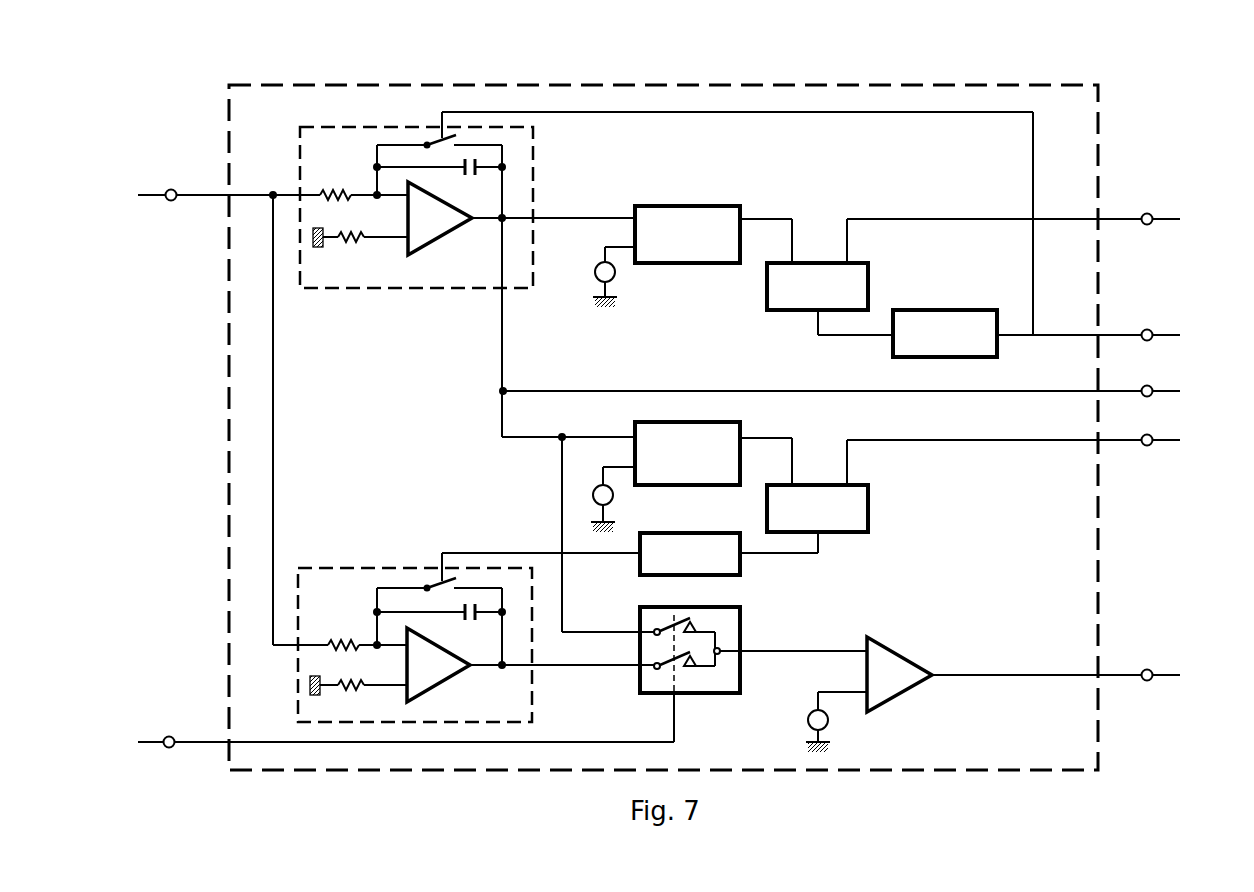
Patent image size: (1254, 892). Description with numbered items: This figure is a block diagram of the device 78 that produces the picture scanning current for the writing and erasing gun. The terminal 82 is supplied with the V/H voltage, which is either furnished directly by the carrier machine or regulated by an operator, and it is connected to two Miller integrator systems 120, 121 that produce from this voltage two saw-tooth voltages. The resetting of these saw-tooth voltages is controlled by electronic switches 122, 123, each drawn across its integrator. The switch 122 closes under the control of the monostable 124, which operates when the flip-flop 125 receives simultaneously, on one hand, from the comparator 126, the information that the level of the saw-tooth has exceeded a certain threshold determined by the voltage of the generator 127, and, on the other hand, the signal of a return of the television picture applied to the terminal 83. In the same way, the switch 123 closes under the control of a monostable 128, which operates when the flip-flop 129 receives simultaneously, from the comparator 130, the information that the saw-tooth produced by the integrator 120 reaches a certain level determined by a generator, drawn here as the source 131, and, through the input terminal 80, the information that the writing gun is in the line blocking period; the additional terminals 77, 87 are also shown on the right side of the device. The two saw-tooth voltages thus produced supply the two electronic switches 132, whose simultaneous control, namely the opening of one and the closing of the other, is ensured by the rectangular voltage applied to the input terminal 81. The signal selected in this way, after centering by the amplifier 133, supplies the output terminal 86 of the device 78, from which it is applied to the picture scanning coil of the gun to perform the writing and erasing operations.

The output terminal 77 is at (1147, 329).
The device 78 is at (245, 442).
The input terminal 80 is at (1147, 446).
The input terminal 81 is at (169, 736).
The terminal 82 is at (171, 189).
The terminal 83 is at (1147, 213).
The output terminal 86 is at (1147, 669).
The output terminal 87 is at (1153, 388).
The Miller integrator system 120 is at (416, 232).
The Miller integrator system 121 is at (415, 607).
The electronic switch 122 is at (437, 137).
The electronic switch 123 is at (433, 580).
The monostable 124 is at (942, 308).
The flip-flop 125 is at (775, 297).
The comparator 126 is at (686, 206).
The generator 127 is at (595, 278).
The monostable 128 is at (727, 567).
The flip-flop 129 is at (868, 508).
The comparator 130 is at (720, 437).
The reference voltage source 131 is at (613, 497).
The electronic switches 132 is at (652, 679).
The amplifier 133 is at (897, 663).